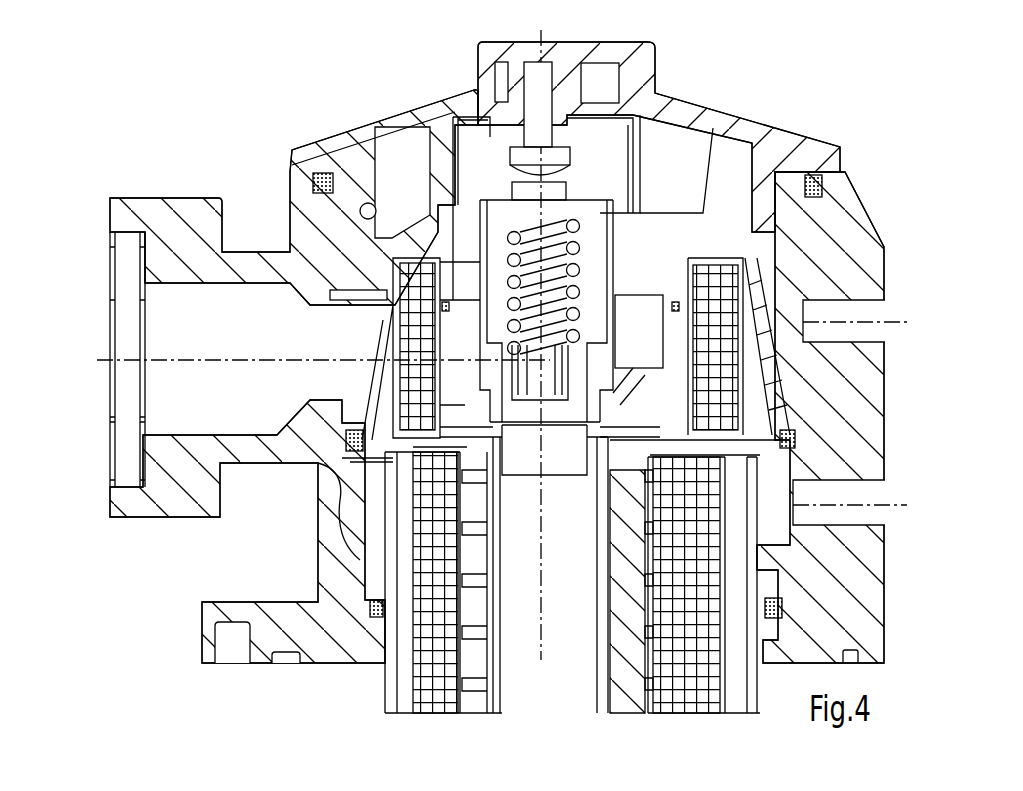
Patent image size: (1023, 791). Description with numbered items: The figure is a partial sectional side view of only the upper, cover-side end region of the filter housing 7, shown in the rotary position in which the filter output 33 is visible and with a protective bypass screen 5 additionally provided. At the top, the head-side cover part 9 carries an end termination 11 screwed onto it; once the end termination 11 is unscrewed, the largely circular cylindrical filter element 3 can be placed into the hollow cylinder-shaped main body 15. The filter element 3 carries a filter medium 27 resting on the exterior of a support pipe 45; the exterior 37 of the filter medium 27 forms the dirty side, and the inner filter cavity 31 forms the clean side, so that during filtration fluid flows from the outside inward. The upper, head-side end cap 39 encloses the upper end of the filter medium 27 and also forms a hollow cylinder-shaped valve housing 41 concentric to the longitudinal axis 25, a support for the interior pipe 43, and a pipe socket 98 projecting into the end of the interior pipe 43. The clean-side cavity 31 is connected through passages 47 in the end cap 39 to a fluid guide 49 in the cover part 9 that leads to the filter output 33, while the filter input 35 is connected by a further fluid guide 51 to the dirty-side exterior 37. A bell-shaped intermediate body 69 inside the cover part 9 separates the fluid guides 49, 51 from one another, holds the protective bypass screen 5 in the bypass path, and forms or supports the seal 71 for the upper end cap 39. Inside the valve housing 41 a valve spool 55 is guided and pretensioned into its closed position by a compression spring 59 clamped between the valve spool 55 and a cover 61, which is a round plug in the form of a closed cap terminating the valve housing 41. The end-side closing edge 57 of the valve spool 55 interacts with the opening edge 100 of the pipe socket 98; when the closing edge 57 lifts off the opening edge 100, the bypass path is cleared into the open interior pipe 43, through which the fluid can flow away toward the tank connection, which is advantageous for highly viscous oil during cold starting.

The filter element 3 is at (740, 612).
The protective bypass screen 5 is at (745, 296).
The filter housing 7 is at (958, 455).
The cover part 9 is at (867, 372).
The end termination 11 is at (752, 128).
The main body 15 is at (768, 655).
The longitudinal axis 25 is at (541, 660).
The filter medium 27 is at (697, 490).
The inner filter cavity 31 is at (478, 476).
The filter output 33 is at (258, 282).
The filter input 35 is at (410, 562).
The exterior of the filter medium 37 is at (767, 652).
The upper end cap 39 is at (740, 453).
The valve housing 41 is at (700, 232).
The interior pipe 43 is at (497, 594).
The support pipe 45 is at (470, 652).
The passages 47 is at (470, 412).
The fluid guide 49 is at (408, 190).
The fluid guide 51 is at (770, 520).
The valve spool 55 is at (385, 318).
The closing edge 57 is at (587, 425).
The compression spring 59 is at (577, 250).
The cover 61 is at (578, 205).
The bell-shaped intermediate body 69 is at (762, 333).
The seal 71 is at (607, 290).
The pipe socket 98 is at (502, 445).
The opening edge 100 is at (495, 417).